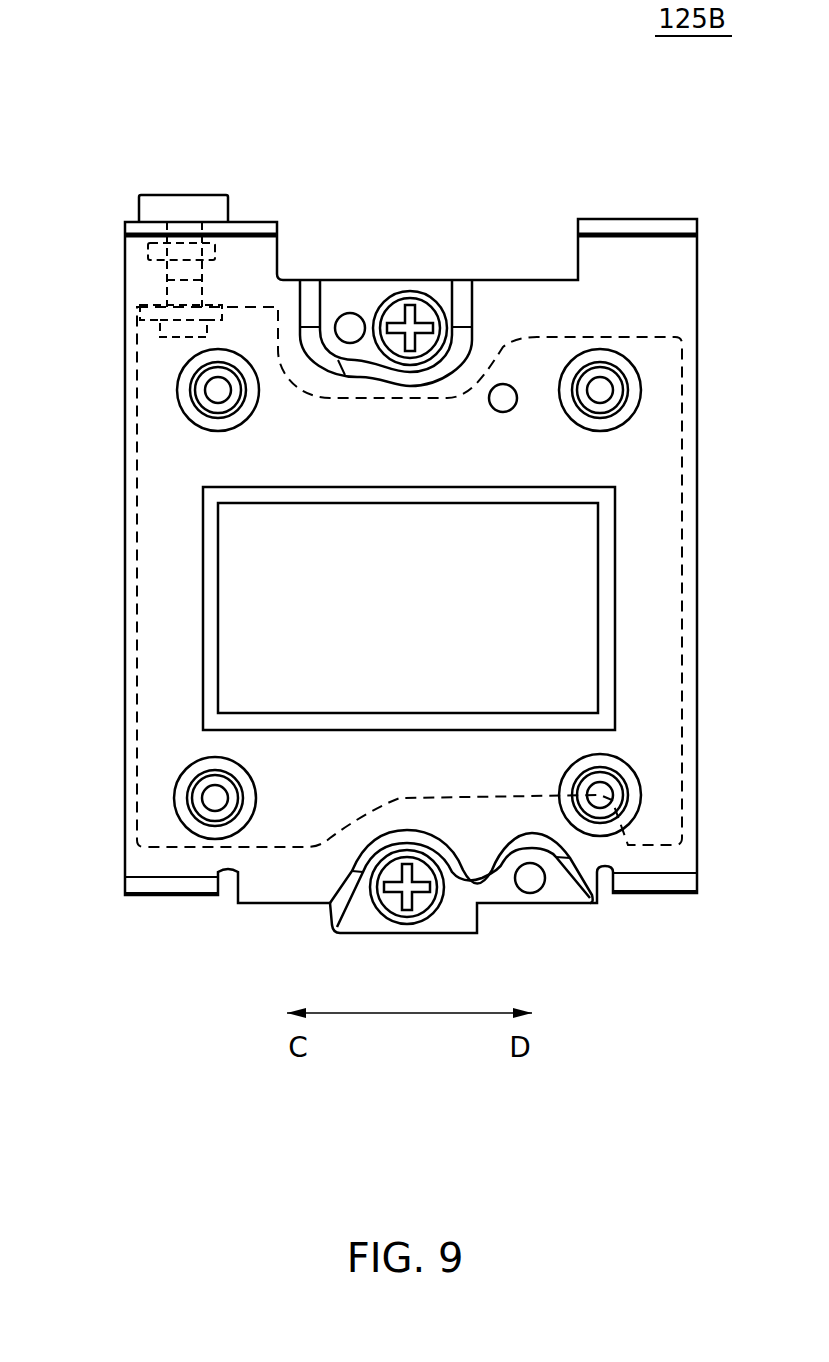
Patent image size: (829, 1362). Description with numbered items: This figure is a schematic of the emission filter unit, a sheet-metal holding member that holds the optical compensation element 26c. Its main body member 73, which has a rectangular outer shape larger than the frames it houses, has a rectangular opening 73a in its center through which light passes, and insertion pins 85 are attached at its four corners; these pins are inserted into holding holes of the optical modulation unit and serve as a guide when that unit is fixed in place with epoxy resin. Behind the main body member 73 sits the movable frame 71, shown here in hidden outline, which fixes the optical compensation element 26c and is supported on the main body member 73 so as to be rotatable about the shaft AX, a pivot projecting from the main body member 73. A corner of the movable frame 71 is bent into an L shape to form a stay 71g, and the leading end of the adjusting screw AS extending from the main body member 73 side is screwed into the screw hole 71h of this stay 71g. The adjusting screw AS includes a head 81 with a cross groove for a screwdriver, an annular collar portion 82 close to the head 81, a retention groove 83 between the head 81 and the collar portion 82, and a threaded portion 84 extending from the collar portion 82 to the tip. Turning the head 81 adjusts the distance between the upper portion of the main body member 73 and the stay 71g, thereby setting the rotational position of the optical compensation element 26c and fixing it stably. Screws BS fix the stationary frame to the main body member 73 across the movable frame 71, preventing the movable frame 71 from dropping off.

The main body member 73 is at (643, 216).
The rectangular opening 73a is at (205, 652).
The optical compensation element 26c is at (568, 617).
The insertion pins 85 is at (641, 391).
The movable frame 71 is at (625, 337).
The stay 71g is at (213, 303).
The screw hole 71h is at (168, 314).
The head 81 is at (185, 207).
The annular collar portion 82 is at (148, 254).
The retention groove 83 is at (207, 235).
The threaded portion 84 is at (178, 280).
The screw BS is at (410, 305).
The shaft AX is at (504, 384).
The adjusting screw AS is at (240, 190).